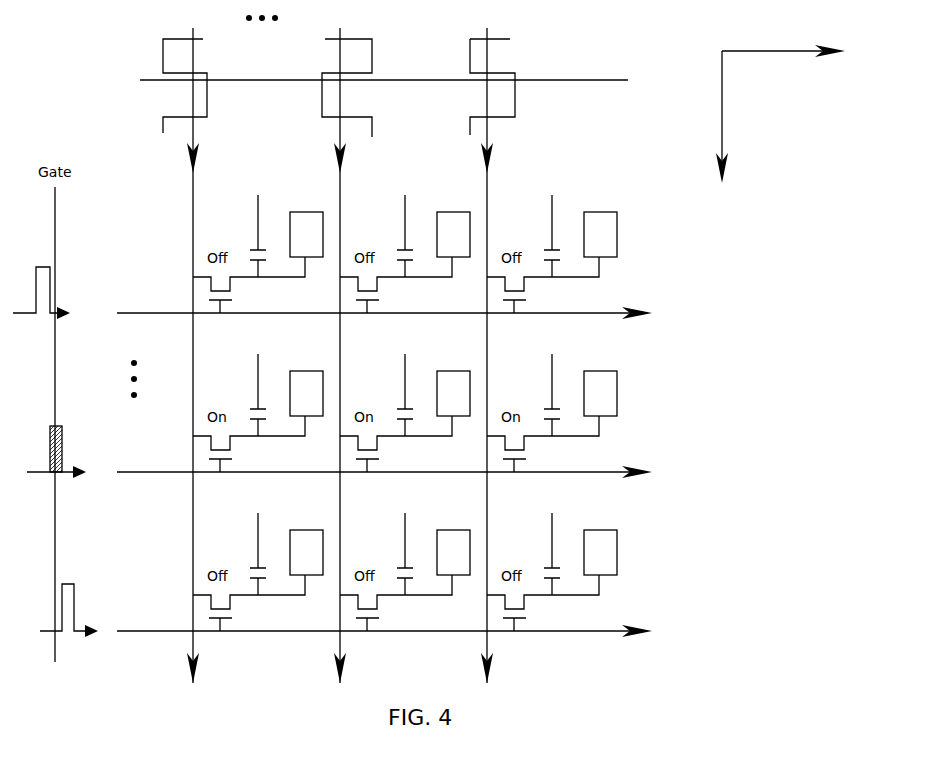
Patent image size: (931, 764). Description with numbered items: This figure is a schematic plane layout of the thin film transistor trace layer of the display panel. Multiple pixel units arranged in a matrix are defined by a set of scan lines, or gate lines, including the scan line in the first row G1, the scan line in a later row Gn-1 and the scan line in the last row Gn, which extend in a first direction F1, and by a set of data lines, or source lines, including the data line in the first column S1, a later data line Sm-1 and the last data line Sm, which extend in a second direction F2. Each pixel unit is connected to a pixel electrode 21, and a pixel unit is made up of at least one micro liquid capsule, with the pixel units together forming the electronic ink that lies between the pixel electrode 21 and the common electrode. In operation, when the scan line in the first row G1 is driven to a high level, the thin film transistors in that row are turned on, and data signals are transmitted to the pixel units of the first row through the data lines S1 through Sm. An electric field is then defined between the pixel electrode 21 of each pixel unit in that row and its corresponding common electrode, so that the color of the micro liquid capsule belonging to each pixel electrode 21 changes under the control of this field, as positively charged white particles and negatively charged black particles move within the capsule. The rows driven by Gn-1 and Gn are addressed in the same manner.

The pixel electrode 21 is at (617, 403).
The data line in a first column S1 is at (185, 347).
The data line in an (m-1)th column Sm-1 is at (345, 347).
The data line in an m-th column Sm is at (492, 347).
The scan line in a first row G1 is at (384, 307).
The scan line in an (n-1)th row Gn-1 is at (384, 466).
The scan line in an n-th row Gn is at (384, 625).
The first direction F1 is at (783, 64).
The second direction F2 is at (736, 117).